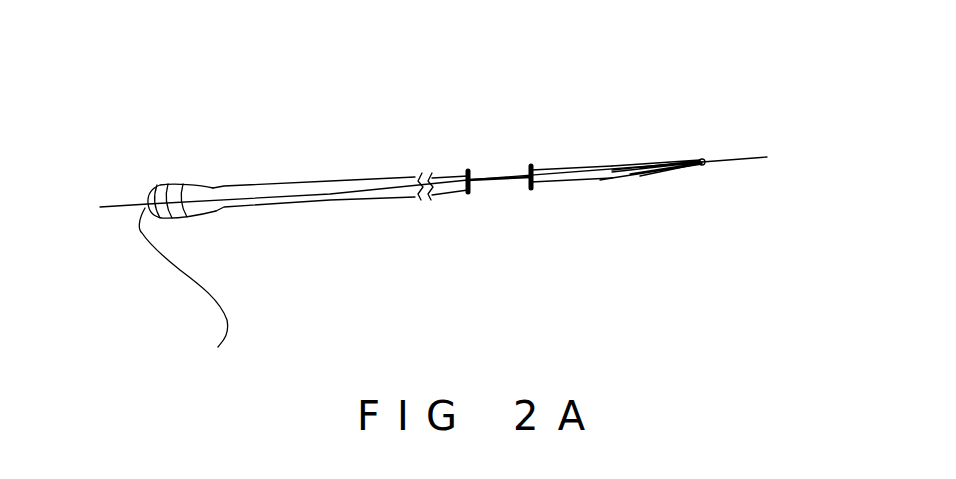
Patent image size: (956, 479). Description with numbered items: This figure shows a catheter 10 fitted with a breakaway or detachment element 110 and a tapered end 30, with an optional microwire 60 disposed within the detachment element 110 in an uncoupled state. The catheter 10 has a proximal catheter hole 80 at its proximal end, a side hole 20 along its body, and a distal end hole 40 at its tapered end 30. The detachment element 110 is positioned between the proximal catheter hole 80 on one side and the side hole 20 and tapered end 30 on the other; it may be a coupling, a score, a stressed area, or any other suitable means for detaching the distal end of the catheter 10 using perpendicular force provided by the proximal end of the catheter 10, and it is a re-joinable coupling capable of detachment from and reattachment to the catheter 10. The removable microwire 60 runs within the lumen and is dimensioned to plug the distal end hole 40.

The catheter 10 is at (213, 182).
The side hole 20 is at (622, 180).
The tapered end 30 is at (667, 155).
The distal end hole 40 is at (703, 165).
The microwire 60 is at (125, 212).
The proximal catheter hole 80 is at (189, 295).
The detachment element 110 is at (472, 177).